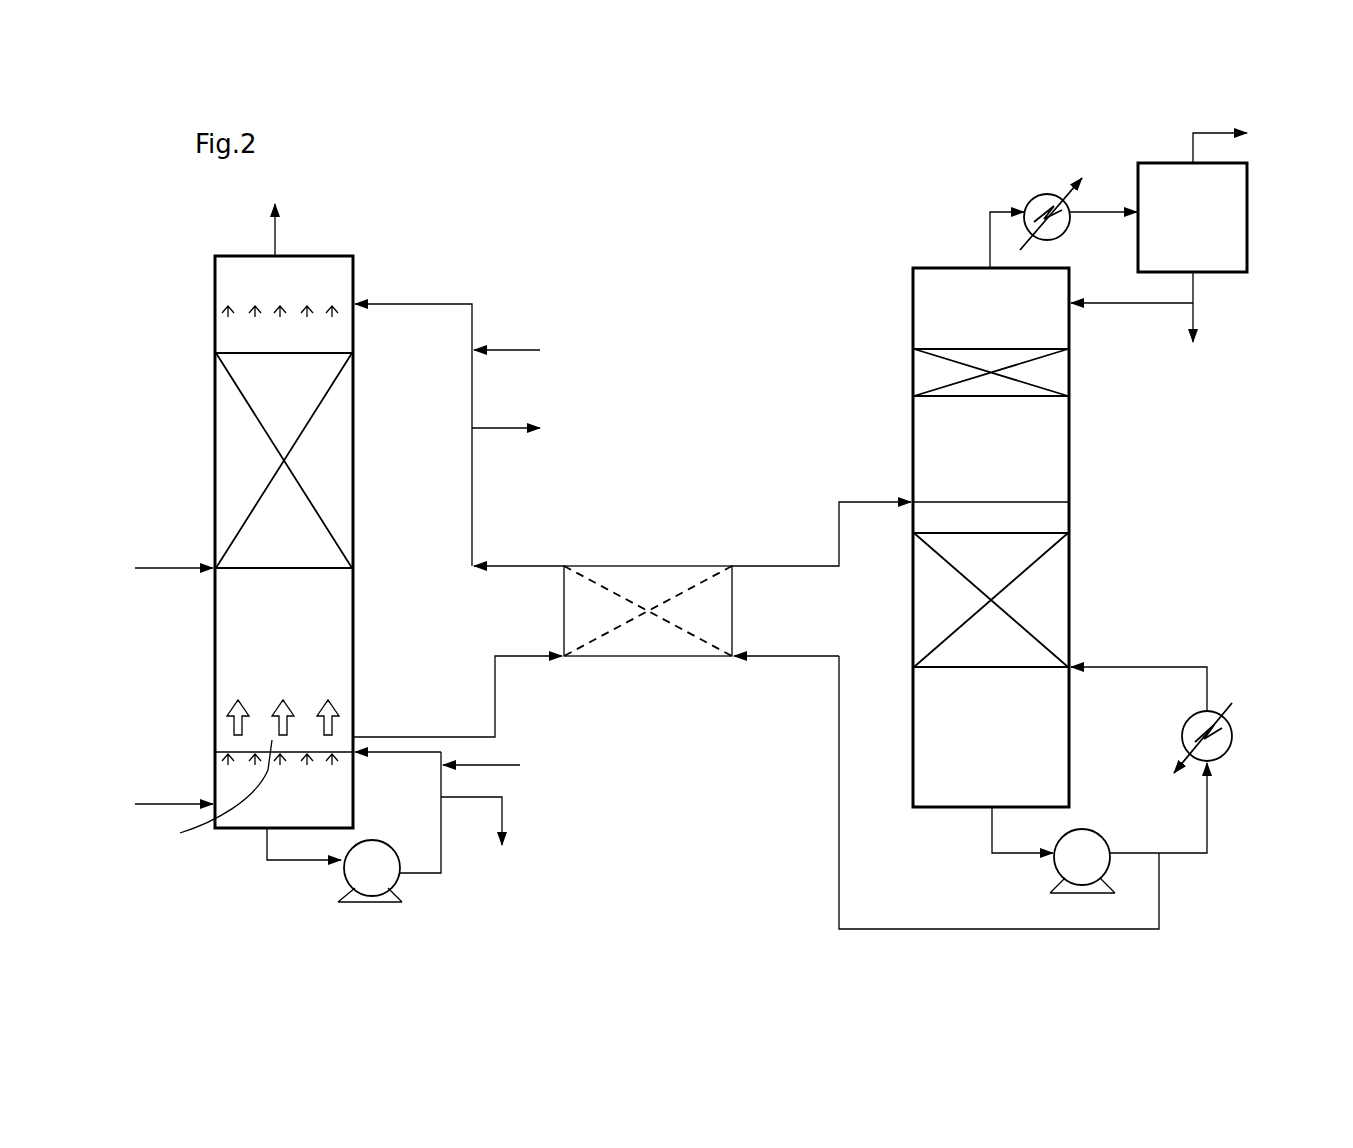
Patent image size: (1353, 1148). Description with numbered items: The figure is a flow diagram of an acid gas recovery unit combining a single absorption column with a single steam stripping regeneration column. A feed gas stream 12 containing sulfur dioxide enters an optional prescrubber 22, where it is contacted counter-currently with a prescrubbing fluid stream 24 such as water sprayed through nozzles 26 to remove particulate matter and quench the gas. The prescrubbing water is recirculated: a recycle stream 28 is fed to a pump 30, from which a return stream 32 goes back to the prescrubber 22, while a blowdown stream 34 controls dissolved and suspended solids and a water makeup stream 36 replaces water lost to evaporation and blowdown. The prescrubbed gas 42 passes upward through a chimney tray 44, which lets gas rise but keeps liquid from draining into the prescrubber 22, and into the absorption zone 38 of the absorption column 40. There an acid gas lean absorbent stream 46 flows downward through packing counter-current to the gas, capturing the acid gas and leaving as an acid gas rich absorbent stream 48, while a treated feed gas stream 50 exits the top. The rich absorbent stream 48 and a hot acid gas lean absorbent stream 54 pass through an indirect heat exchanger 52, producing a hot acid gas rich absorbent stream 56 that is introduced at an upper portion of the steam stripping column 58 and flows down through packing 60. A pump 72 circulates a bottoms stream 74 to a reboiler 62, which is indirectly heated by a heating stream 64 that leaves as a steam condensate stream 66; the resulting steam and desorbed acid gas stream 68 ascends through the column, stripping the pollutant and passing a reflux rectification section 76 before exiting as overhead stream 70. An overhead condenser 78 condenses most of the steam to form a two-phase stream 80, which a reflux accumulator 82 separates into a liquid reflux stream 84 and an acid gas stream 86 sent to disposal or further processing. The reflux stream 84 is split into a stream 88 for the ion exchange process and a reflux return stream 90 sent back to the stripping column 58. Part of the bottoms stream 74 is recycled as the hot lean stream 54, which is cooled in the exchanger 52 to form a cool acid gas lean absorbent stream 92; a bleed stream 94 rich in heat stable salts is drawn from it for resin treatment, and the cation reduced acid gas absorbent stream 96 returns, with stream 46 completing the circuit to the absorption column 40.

The feed gas stream 12 is at (213, 768).
The prescrubber 22 is at (157, 805).
The prescrubbing fluid stream 24 is at (410, 753).
The nozzles 26 is at (215, 752).
The recycle stream 28 is at (267, 855).
The pump 30 is at (357, 882).
The return stream 32 is at (443, 857).
The blowdown stream 34 is at (503, 808).
The water makeup stream 36 is at (499, 766).
The absorption zone 38 is at (230, 460).
The absorption column 40 is at (153, 569).
The prescrubbed gas 42 is at (232, 718).
The chimney tray 44 is at (215, 801).
The acid gas lean absorbent stream 46 is at (408, 304).
The acid gas rich absorbent stream 48 is at (410, 737).
The treated feed gas stream 50 is at (275, 238).
The indirect heat exchanger 52 is at (624, 657).
The hot acid gas lean absorbent stream 54 is at (840, 786).
The hot acid gas rich absorbent stream 56 is at (872, 503).
The steam stripping column 58 is at (1071, 471).
The packing 60 is at (1055, 595).
The reboiler 62 is at (1246, 747).
The heating stream 64 is at (1228, 718).
The steam condensate stream 66 is at (1182, 742).
The steam and desorbed acid gas stream 68 is at (1150, 667).
The overhead stream 70 is at (990, 235).
The pump 72 is at (1067, 871).
The bottoms stream 74 is at (1018, 855).
The reflux rectification section 76 is at (1058, 371).
The overhead condenser 78 is at (1035, 200).
The two-phase stream 80 is at (1100, 212).
The reflux accumulator 82 is at (1178, 226).
The liquid reflux stream 84 is at (1195, 290).
The acid gas stream 86 is at (1240, 141).
The reflux portion to ion exchange 88 is at (1192, 339).
The reflux return stream 90 is at (1125, 303).
The cool acid gas lean absorbent stream 92 is at (518, 566).
The bleed stream 94 is at (526, 429).
The cation reduced acid gas absorbent stream 96 is at (527, 351).